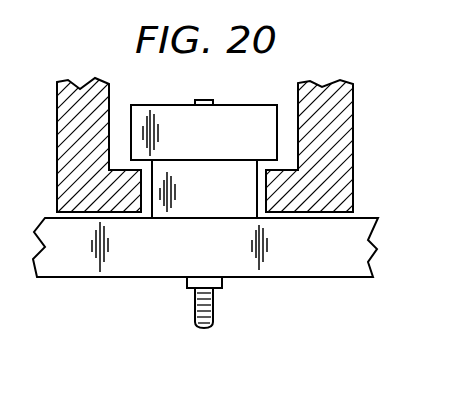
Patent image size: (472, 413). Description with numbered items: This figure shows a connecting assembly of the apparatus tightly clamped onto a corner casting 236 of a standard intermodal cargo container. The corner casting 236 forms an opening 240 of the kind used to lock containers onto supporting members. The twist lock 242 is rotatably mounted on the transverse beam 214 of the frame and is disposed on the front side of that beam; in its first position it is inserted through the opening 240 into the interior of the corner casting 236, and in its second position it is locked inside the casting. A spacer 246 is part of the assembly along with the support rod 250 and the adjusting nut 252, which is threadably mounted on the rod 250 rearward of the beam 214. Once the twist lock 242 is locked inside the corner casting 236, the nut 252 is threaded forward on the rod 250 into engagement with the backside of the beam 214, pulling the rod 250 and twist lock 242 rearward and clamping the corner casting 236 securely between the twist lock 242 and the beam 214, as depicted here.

The transverse beam 214 is at (333, 261).
The corner casting 236 is at (353, 128).
The opening 240 is at (266, 201).
The twist lock 242 is at (223, 146).
The spacer 246 is at (223, 203).
The support rod 250 is at (193, 319).
The adjusting nut 252 is at (190, 281).